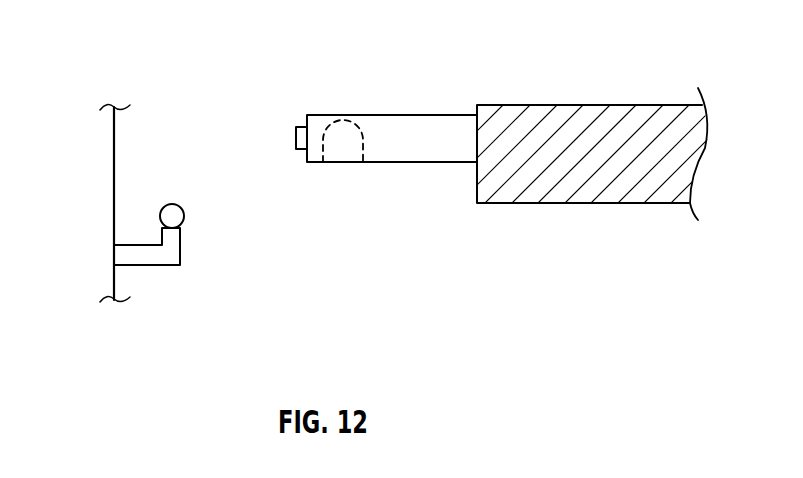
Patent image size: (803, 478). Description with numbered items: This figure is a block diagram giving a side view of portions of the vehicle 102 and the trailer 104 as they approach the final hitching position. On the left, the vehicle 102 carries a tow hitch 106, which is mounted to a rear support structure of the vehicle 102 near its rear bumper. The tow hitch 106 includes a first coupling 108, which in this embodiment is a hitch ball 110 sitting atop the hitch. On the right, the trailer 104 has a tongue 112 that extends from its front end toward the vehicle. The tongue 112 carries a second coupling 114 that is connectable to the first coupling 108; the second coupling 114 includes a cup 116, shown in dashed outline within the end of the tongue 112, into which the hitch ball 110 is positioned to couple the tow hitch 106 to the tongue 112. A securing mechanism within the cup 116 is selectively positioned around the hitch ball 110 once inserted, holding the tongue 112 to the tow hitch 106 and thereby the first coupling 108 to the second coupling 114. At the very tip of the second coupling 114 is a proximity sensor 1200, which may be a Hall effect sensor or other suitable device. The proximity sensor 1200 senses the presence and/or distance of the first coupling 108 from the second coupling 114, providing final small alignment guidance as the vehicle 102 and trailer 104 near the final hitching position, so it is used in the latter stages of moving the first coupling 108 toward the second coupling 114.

The vehicle 102 is at (113, 164).
The trailer 104 is at (593, 105).
The tow hitch 106 is at (160, 284).
The first coupling 108 is at (210, 188).
The hitch ball 110 is at (185, 216).
The tongue 112 is at (368, 136).
The second coupling 114 is at (338, 180).
The cup 116 is at (344, 118).
The proximity sensor 1200 is at (302, 126).